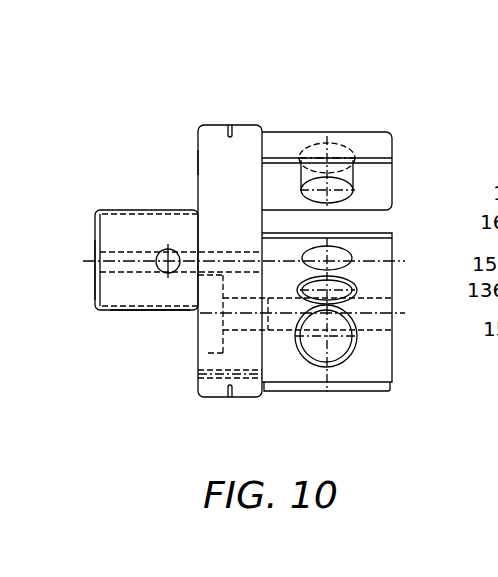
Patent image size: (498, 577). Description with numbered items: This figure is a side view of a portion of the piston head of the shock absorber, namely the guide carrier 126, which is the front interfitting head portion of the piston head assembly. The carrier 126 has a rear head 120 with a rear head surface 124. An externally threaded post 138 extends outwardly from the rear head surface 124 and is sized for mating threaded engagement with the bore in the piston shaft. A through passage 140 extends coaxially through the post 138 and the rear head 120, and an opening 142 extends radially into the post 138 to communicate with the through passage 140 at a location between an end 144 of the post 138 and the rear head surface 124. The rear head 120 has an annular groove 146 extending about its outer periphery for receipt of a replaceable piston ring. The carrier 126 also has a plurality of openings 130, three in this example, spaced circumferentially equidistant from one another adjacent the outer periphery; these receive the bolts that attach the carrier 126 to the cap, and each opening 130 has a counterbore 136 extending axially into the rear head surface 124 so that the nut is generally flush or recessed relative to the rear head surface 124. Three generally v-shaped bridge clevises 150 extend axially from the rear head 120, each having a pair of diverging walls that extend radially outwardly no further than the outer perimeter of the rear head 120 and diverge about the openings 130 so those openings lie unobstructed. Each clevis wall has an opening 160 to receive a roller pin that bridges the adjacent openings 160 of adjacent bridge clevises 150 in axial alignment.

The guide carrier 126 is at (303, 91).
The rear head 120 is at (212, 125).
The rear head surface 124 is at (198, 160).
The annular groove 146 is at (229, 129).
The through passage 140 is at (100, 252).
The end of the post 144 is at (95, 292).
The externally threaded post 138 is at (100, 312).
The opening 142 is at (166, 254).
The bridge clevis 150 is at (392, 138).
The opening 160 is at (335, 190).
The opening 130 is at (225, 298).
The counterbore 136 is at (216, 353).